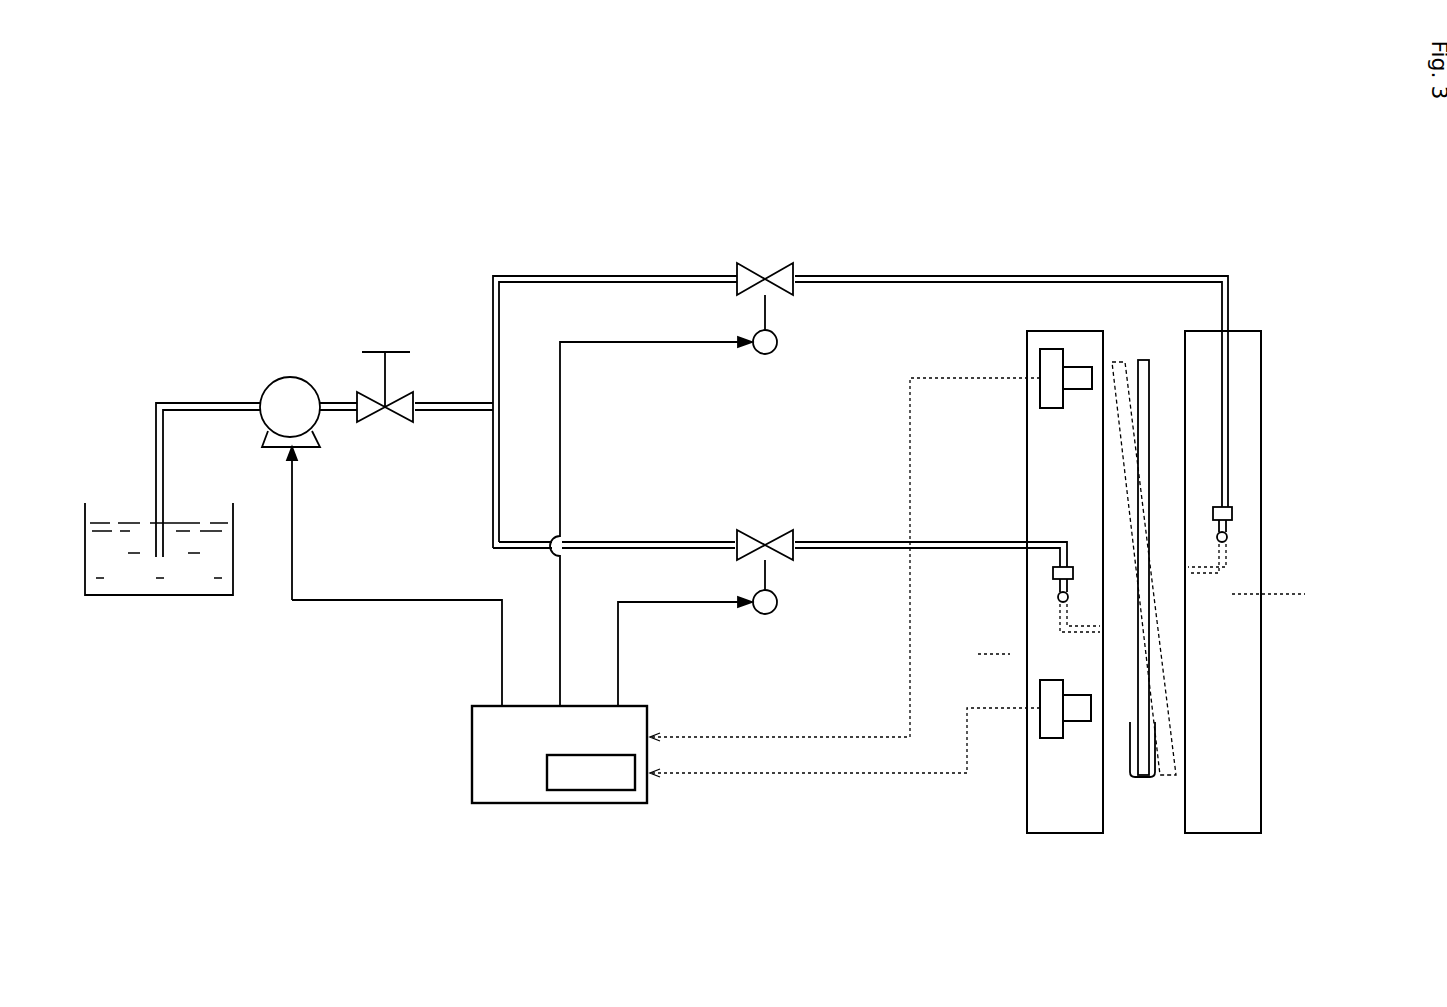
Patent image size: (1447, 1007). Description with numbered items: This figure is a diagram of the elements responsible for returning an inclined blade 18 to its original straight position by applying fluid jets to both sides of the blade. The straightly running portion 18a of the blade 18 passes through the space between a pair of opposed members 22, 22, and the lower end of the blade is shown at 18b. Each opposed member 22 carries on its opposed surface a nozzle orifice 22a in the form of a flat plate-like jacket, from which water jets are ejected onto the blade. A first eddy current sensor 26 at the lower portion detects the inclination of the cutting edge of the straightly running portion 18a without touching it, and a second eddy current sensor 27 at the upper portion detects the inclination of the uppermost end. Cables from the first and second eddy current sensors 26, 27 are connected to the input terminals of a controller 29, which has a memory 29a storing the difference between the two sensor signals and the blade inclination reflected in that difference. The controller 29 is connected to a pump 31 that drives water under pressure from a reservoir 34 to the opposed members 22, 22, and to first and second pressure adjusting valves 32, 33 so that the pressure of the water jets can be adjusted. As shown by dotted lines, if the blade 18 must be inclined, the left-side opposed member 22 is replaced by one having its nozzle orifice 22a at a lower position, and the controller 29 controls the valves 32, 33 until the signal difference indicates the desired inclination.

The blade 18 is at (1160, 352).
The straightly running portion 18a is at (1135, 686).
The plate holder 18b is at (1141, 780).
The opposed member 22 is at (1263, 483).
The nozzle orifice 22a is at (1080, 634).
The first eddy current sensor 26 is at (1080, 722).
The second eddy current sensor 27 is at (1082, 365).
The controller 29 is at (541, 805).
The memory 29a is at (605, 805).
The pump 31 is at (292, 377).
The first pressure adjusting valve 32 is at (780, 560).
The second pressure adjusting valve 33 is at (757, 265).
The reservoir 34 is at (393, 420).